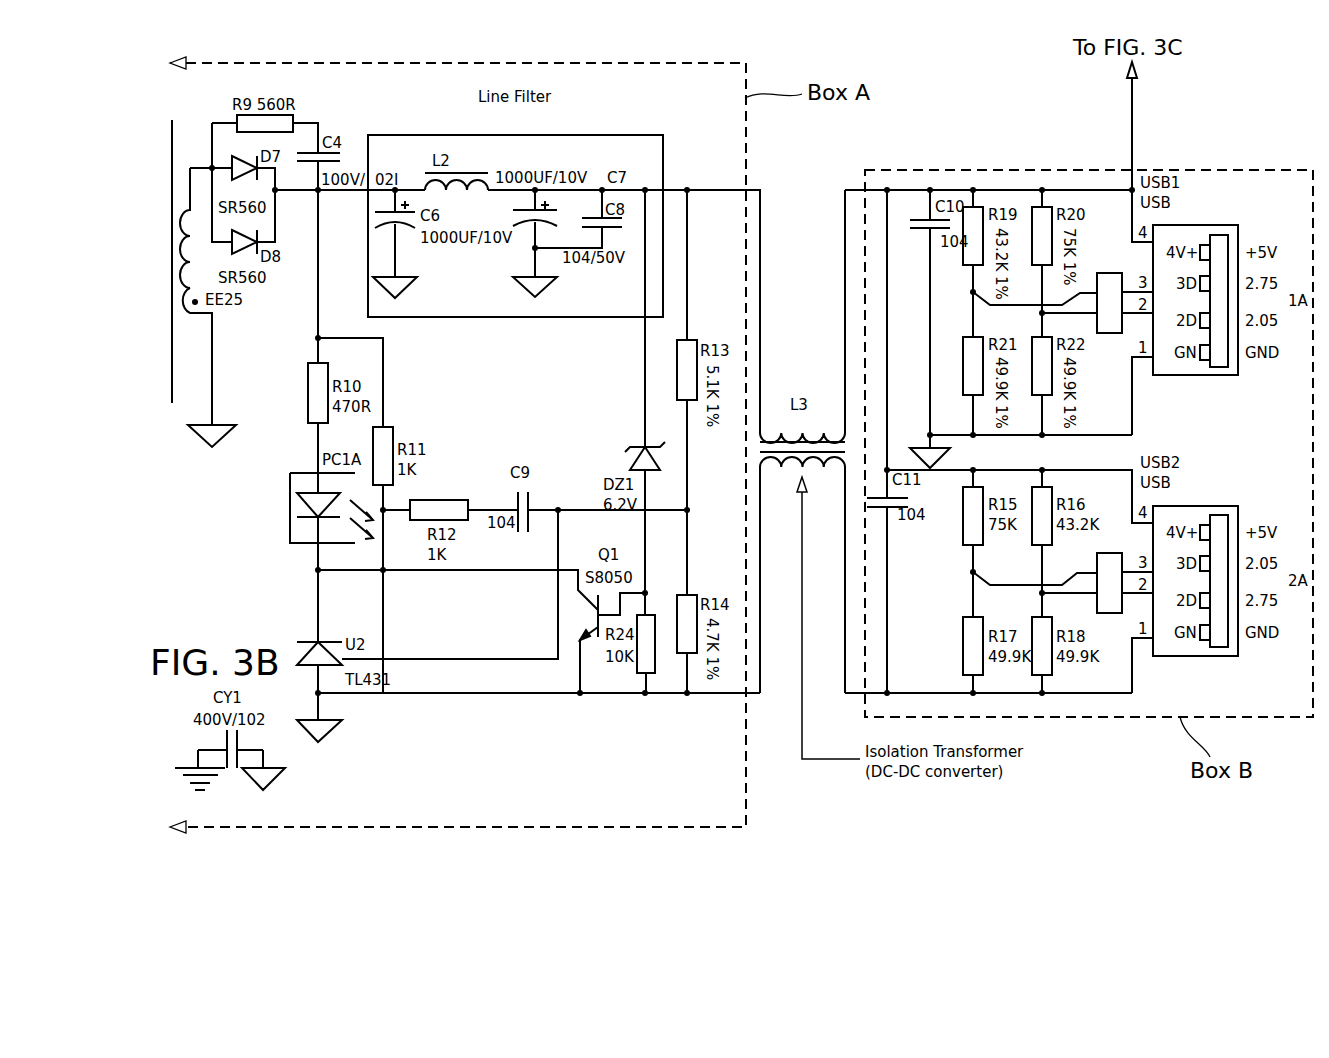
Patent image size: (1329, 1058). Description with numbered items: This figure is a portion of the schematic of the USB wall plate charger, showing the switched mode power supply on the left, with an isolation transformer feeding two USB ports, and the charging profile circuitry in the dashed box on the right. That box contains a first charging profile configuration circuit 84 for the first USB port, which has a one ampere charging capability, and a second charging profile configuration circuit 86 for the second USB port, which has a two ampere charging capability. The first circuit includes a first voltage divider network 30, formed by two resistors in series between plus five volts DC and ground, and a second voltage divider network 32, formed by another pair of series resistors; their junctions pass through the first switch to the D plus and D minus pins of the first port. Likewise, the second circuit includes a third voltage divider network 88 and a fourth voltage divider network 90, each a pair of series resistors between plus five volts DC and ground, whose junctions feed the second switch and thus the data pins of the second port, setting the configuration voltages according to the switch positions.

The first voltage divider network 30 is at (946, 287).
The second voltage divider network 32 is at (1090, 255).
The first charging profile configuration circuit 84 is at (1000, 175).
The second charging profile configuration circuit 86 is at (1012, 706).
The third voltage divider network 88 is at (958, 588).
The fourth voltage divider network 90 is at (1067, 570).